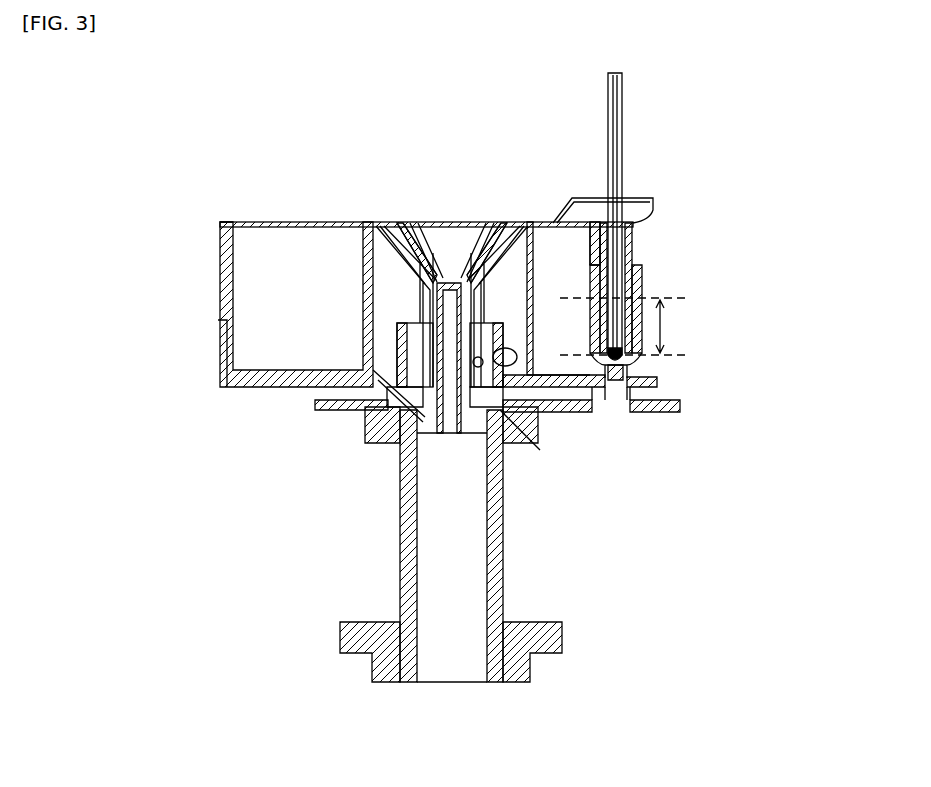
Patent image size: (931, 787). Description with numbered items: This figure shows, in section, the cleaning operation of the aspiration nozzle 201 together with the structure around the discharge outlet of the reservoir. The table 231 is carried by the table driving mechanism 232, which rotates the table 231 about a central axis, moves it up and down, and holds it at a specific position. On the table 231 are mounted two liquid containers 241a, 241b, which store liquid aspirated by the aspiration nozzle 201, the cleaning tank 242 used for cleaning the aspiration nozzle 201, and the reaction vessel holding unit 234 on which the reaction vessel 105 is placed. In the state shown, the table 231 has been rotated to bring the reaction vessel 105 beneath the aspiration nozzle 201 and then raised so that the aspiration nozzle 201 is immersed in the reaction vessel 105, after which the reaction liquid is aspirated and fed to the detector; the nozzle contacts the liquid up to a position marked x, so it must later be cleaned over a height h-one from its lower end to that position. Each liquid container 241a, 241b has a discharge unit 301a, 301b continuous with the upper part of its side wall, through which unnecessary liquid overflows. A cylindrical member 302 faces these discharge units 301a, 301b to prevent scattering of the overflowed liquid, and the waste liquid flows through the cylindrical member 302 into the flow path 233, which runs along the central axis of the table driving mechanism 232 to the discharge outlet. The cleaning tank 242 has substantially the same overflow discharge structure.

The liquid container 241a is at (287, 225).
The liquid container 241b is at (445, 225).
The discharge unit 301a is at (385, 225).
The discharge unit 301b is at (460, 225).
The cleaning tank 242 is at (553, 225).
The aspiration nozzle 201 is at (625, 128).
The reaction vessel 105 is at (655, 243).
The reaction vessel holding unit 234 is at (650, 300).
The table 231 is at (708, 372).
The cylindrical member 302 is at (503, 440).
The flow path 233 is at (435, 553).
The table driving mechanism 232 is at (565, 632).